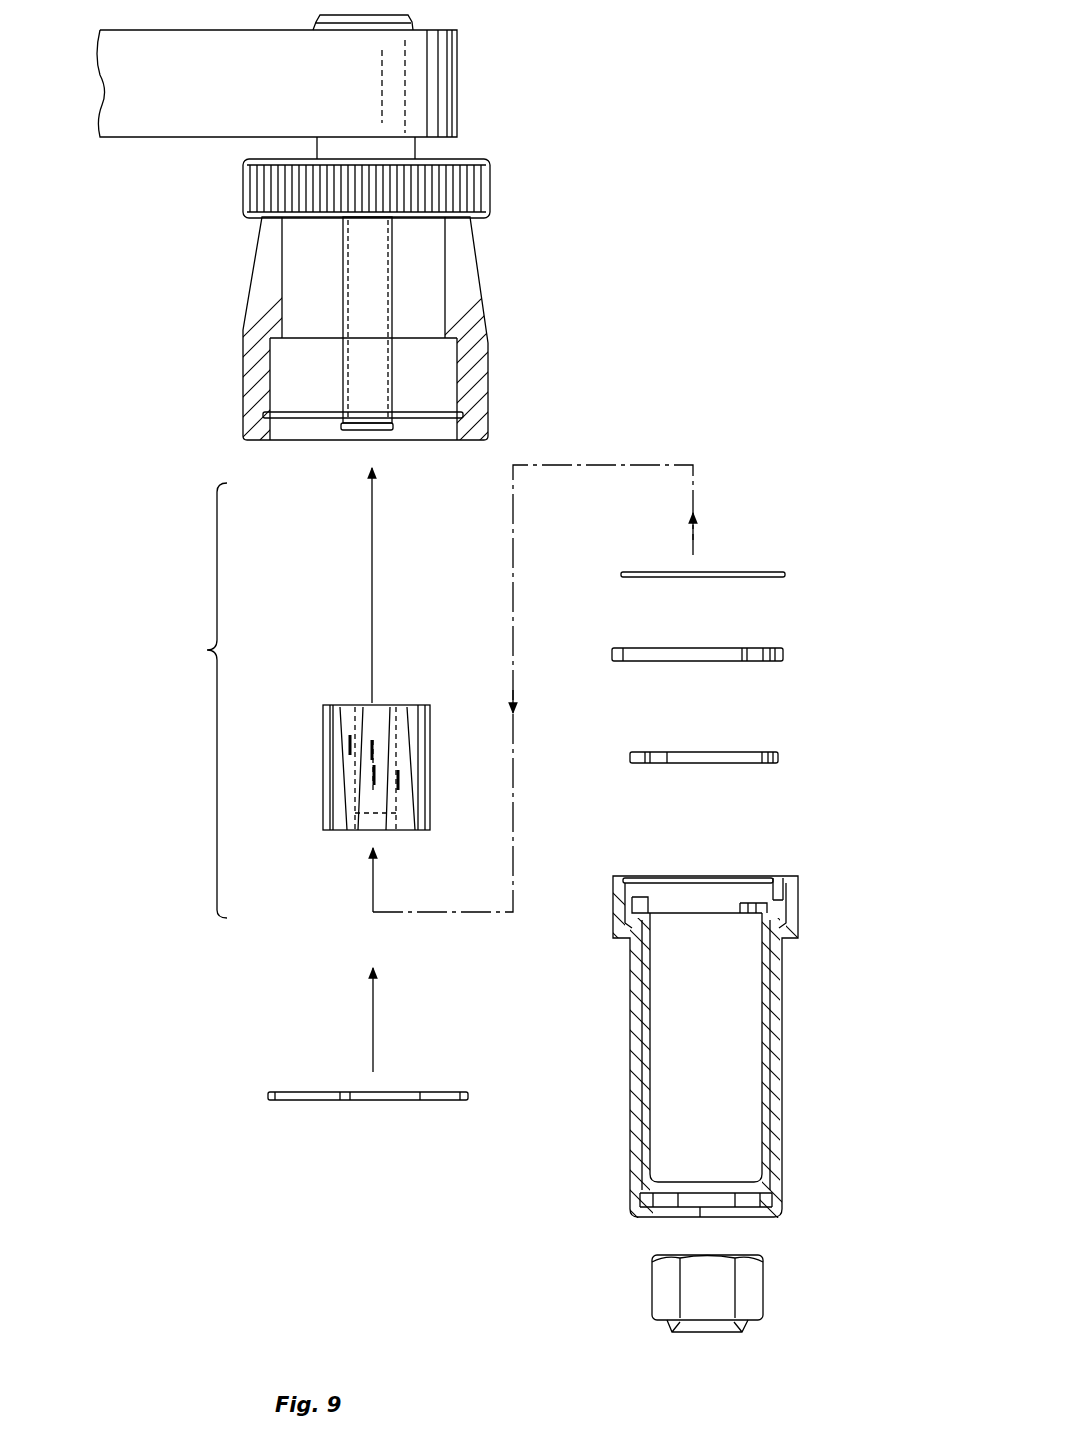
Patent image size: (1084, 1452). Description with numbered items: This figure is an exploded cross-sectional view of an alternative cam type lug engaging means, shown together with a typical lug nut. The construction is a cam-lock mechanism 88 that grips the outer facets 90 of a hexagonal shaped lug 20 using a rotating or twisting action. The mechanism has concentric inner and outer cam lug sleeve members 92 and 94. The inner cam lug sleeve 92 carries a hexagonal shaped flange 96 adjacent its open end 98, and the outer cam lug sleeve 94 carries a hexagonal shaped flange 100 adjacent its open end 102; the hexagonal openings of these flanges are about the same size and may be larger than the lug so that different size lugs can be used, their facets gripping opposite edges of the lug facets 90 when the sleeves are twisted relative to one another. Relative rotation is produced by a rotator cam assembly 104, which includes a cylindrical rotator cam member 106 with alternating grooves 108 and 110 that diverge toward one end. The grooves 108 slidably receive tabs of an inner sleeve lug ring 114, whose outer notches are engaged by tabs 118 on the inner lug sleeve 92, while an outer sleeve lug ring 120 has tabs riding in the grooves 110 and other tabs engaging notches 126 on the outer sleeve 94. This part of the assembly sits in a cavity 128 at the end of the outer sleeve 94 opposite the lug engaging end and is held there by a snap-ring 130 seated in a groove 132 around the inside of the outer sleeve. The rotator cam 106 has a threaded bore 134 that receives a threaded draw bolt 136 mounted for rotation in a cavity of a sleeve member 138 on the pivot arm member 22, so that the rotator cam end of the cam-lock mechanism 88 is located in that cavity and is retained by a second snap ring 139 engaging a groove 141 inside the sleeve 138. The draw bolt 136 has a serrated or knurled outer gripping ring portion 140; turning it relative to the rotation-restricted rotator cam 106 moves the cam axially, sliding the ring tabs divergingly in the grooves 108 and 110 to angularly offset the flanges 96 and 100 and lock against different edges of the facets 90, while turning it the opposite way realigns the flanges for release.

The hexagonal shaped lug 20 is at (660, 1328).
The pivot arm member 22 is at (460, 63).
The cam-lock mechanism 88 is at (852, 1191).
The facets 90 is at (700, 1290).
The inner cam lug sleeve 92 is at (700, 1092).
The outer cam lug sleeve 94 is at (790, 1065).
The hexagonal shaped flange 96 is at (748, 1176).
The open end 98 is at (663, 1197).
The hexagonal shaped flange 100 is at (747, 1210).
The open end 102 is at (700, 1217).
The rotator cam assembly 104 is at (193, 700).
The rotator cam member 106 is at (367, 760).
The grooves 108 is at (337, 777).
The grooves 110 is at (390, 703).
The inner sleeve lug ring 114 is at (772, 752).
The tabs 118 is at (655, 905).
The outer sleeve lug ring 120 is at (780, 653).
The notches 126 is at (614, 892).
The cavity 128 is at (745, 900).
The snap-ring 130 is at (752, 572).
The groove 132 is at (633, 876).
The threaded bore 134 is at (372, 700).
The threaded draw bolt 136 is at (404, 372).
The sleeve member 138 is at (232, 364).
The second snap ring 139 is at (313, 1100).
The knurled outer gripping ring portion 140 is at (492, 186).
The groove 141 is at (296, 420).